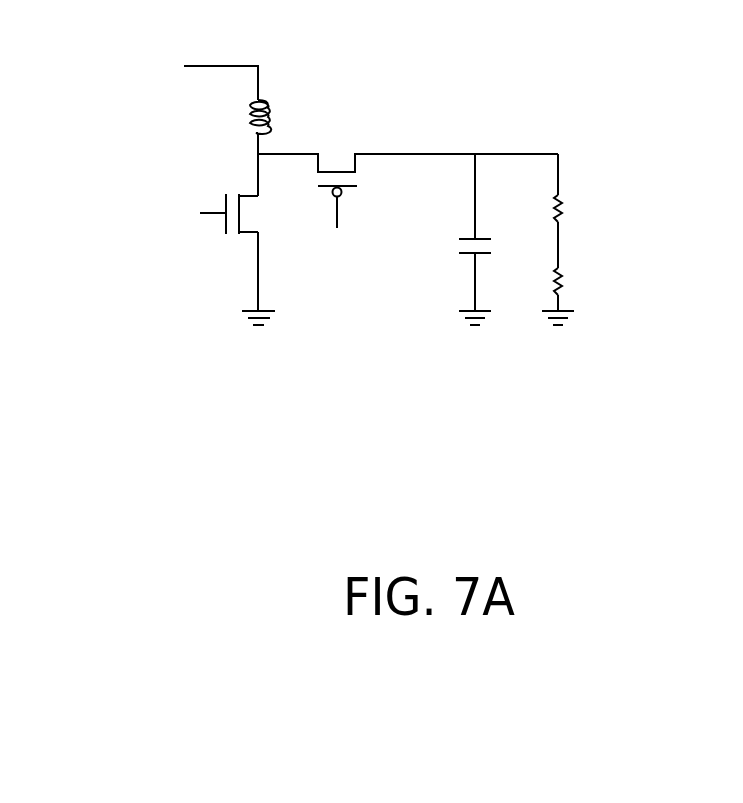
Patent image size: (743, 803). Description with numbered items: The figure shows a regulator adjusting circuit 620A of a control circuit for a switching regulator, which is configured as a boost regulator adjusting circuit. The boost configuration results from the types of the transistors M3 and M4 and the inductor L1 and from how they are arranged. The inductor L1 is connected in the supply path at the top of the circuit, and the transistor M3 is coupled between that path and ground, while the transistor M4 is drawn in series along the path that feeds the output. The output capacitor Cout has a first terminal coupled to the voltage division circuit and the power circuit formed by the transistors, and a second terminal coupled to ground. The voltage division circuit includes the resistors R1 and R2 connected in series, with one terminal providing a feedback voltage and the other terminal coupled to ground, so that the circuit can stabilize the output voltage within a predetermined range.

The inductor L1 is at (278, 116).
The transistor M3 is at (248, 259).
The transistor M4 is at (357, 191).
The output capacitor Cout is at (505, 239).
The resistor R1 is at (576, 199).
The resistor R2 is at (570, 285).
The regulator adjusting circuit 620A is at (688, 428).